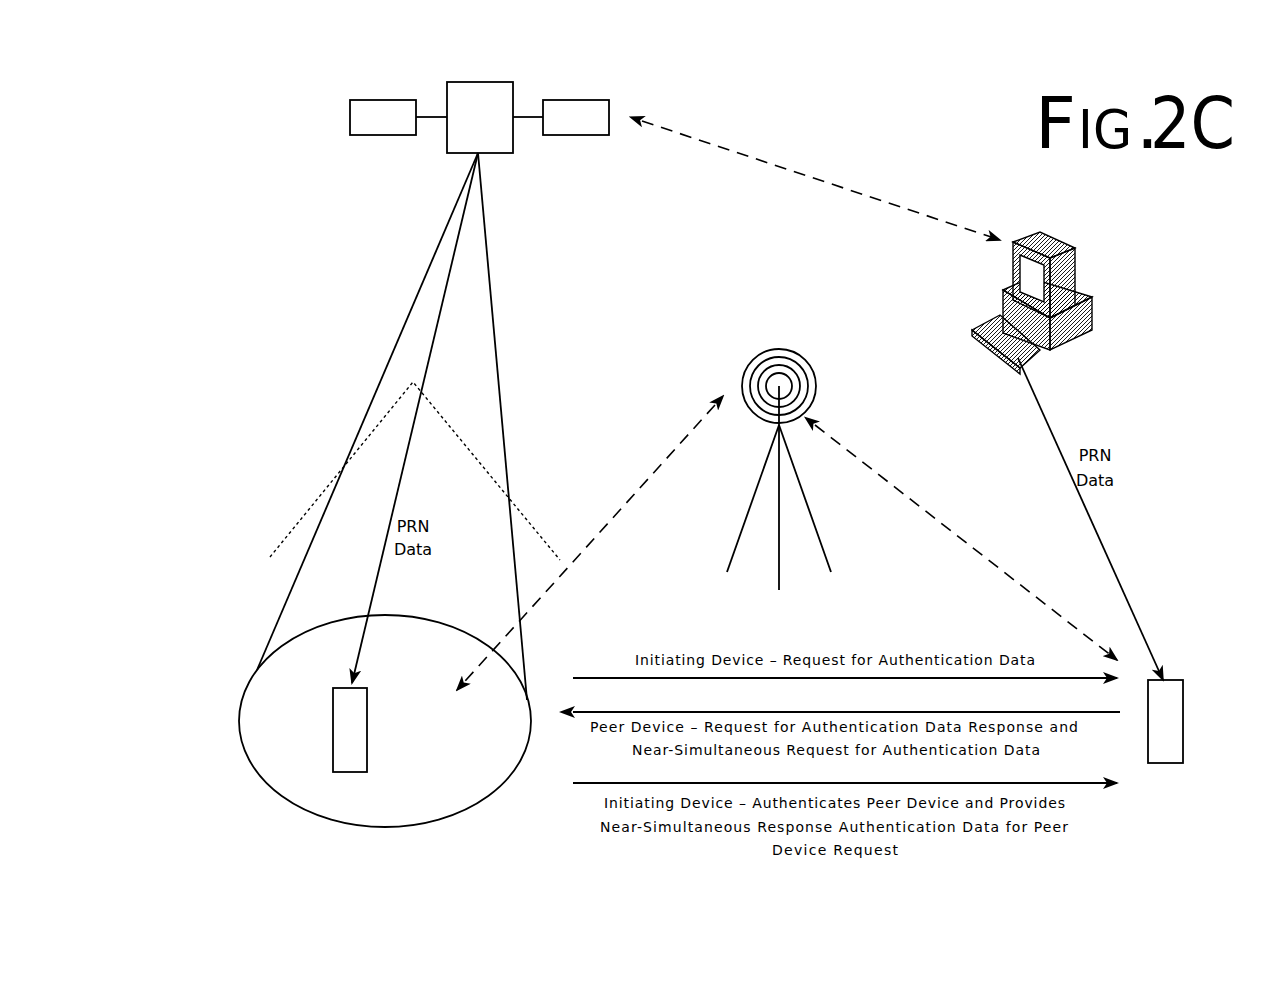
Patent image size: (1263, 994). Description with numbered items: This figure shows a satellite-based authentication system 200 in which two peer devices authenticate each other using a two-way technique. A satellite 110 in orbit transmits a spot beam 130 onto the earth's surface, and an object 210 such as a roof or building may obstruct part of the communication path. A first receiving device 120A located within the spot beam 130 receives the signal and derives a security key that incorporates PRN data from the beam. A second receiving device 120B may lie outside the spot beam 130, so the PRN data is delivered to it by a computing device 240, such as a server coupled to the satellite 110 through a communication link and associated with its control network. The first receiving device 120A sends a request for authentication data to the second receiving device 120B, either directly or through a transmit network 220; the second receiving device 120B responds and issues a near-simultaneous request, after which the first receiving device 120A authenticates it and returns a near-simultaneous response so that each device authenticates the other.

The satellite-based authentication system 200 is at (372, 43).
The satellite 110 is at (482, 82).
The object 210 is at (296, 522).
The spot beam 130 is at (420, 823).
The first receiving device 120A is at (367, 730).
The second receiving device 120B is at (1166, 680).
The transmit network 220 is at (782, 340).
The computing device 240 is at (1040, 240).